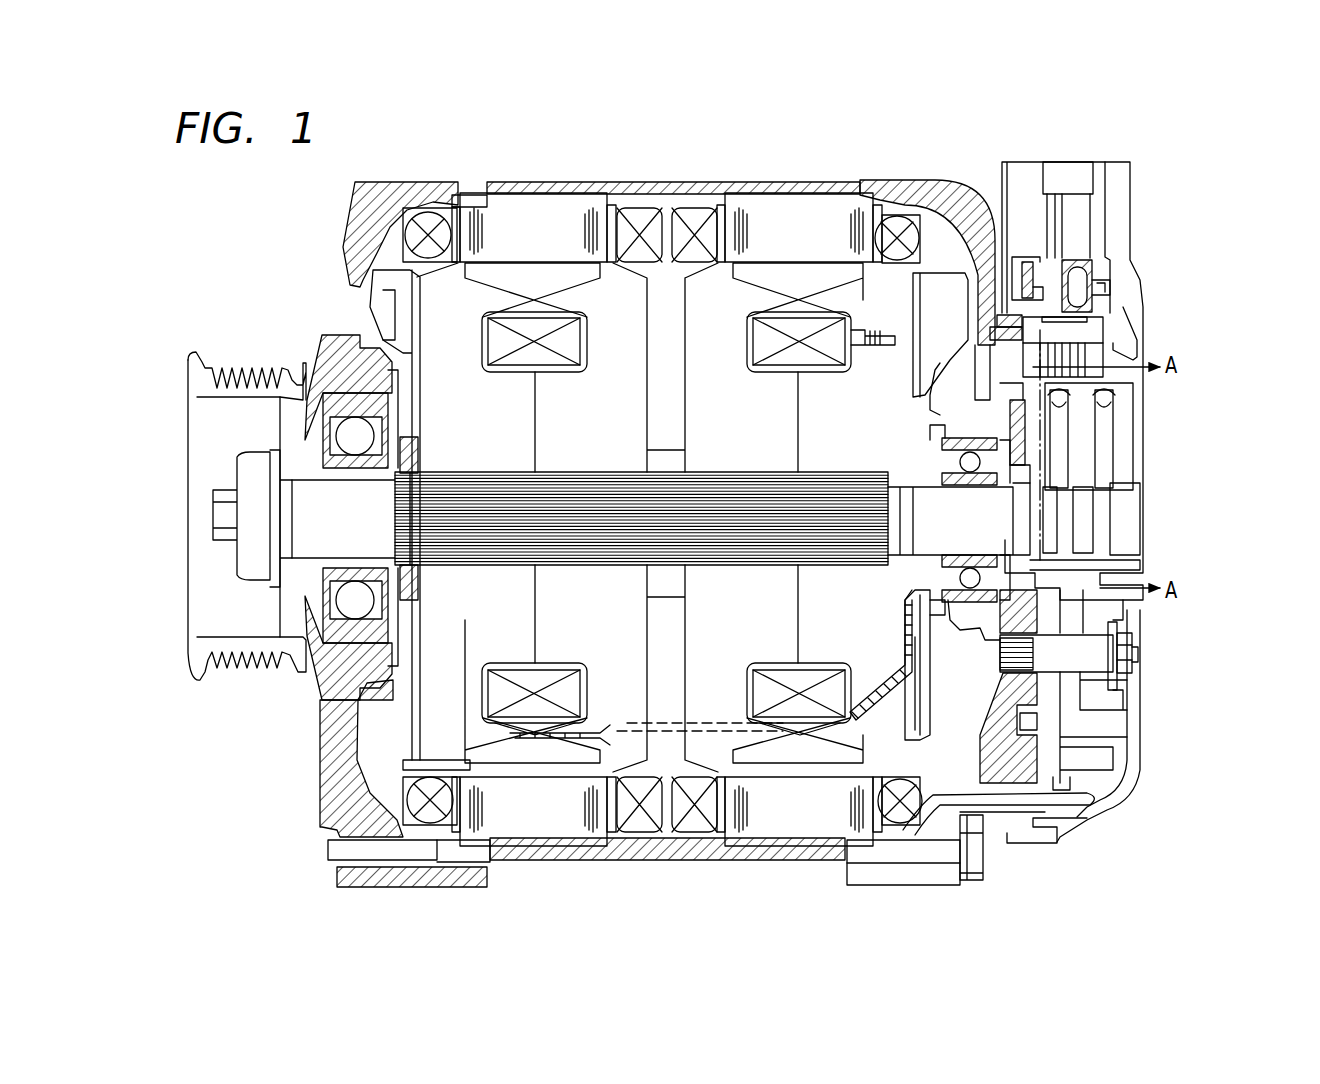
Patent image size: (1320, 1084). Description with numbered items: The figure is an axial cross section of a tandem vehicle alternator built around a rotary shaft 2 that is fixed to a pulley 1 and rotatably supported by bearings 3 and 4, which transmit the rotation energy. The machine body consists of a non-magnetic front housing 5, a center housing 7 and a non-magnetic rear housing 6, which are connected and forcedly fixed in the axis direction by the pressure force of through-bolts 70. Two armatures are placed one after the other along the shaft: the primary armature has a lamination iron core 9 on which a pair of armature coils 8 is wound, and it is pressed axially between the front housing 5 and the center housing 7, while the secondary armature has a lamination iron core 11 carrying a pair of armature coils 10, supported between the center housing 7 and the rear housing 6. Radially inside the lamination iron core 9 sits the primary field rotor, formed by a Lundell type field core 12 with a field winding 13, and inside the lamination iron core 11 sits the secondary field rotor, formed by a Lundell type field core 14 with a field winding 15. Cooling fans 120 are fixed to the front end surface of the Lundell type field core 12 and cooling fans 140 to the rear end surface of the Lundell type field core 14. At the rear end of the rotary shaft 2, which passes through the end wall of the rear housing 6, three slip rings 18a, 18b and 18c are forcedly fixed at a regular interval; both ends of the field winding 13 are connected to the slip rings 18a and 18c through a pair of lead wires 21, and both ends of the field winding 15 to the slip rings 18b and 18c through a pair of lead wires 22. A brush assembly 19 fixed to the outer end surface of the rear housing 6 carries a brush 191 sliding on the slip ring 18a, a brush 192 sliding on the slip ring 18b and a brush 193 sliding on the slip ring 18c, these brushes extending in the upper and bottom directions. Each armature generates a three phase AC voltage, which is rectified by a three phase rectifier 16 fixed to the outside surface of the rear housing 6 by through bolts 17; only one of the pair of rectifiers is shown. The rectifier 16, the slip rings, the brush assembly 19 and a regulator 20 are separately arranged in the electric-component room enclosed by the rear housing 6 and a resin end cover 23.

The pulley 1 is at (205, 672).
The rotary shaft 2 is at (312, 535).
The bearing 3 is at (248, 460).
The bearing 4 is at (960, 605).
The front housing 5 is at (452, 190).
The rear housing 6 is at (920, 190).
The center housing 7 is at (618, 182).
The armature coils 8 is at (430, 215).
The lamination iron core 9 is at (519, 218).
The armature coils 10 is at (692, 218).
The lamination iron core 11 is at (780, 218).
The Lundell type field core 12 is at (548, 442).
The field winding 13 is at (546, 368).
The Lundell type field core 14 is at (814, 450).
The field winding 15 is at (812, 370).
The three phase rectifier 16 is at (1102, 776).
The through bolts 17 is at (1145, 655).
The slip ring 18a is at (1150, 495).
The slip ring 18b is at (1085, 555).
The slip ring 18c is at (1050, 540).
The brush assembly 19 is at (1140, 388).
The regulator 20 is at (1102, 210).
The lead wires 21 is at (866, 712).
The lead wires 22 is at (882, 333).
The end cover 23 is at (1100, 820).
The through-bolts 70 is at (980, 848).
The cooling fans 120 is at (377, 312).
The cooling fans 140 is at (930, 365).
The brush 191 is at (1115, 412).
The brush 192 is at (1070, 440).
The brush 193 is at (1022, 400).